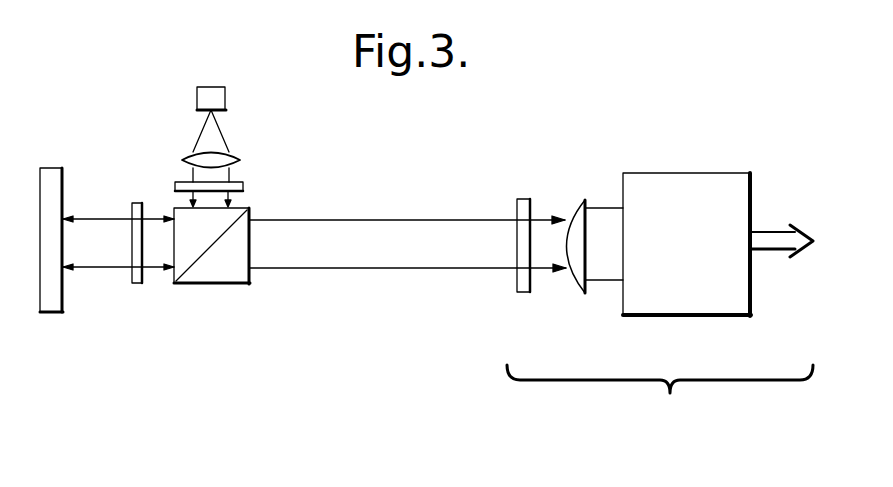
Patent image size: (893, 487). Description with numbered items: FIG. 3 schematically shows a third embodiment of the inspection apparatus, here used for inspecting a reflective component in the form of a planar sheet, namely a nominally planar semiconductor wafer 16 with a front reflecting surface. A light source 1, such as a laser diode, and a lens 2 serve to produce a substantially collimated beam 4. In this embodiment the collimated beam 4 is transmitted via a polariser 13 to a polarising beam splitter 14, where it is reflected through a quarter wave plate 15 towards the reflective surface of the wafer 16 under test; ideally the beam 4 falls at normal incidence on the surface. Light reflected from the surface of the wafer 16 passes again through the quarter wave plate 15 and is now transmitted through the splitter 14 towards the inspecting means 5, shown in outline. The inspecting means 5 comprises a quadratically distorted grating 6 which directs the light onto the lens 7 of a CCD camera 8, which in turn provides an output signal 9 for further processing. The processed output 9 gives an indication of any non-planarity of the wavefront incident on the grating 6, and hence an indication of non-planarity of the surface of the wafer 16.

The light source 1 is at (225, 97).
The lens 2 is at (238, 158).
The collimated beam 4 is at (196, 175).
The inspecting means 5 is at (660, 396).
The quadratically distorted grating 6 is at (520, 292).
The lens 7 is at (575, 284).
The CCD camera 8 is at (690, 261).
The output signal 9 is at (768, 251).
The polariser 13 is at (243, 186).
The polarising beam splitter 14 is at (203, 272).
The quarter wave plate 15 is at (137, 283).
The semiconductor wafer 16 is at (48, 302).